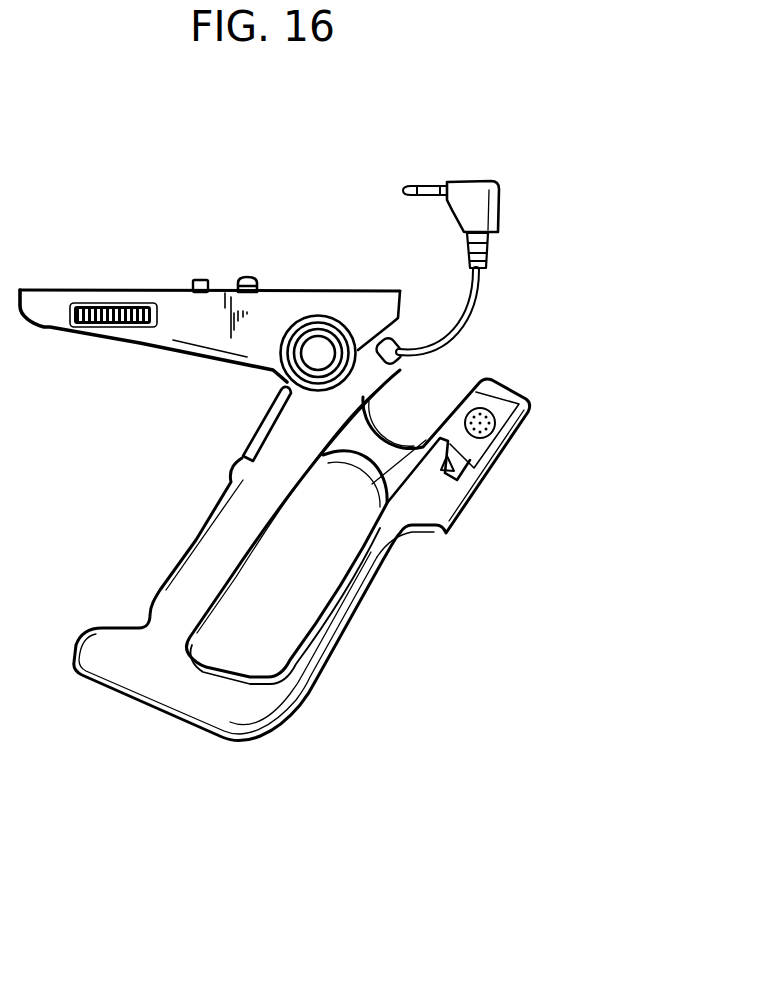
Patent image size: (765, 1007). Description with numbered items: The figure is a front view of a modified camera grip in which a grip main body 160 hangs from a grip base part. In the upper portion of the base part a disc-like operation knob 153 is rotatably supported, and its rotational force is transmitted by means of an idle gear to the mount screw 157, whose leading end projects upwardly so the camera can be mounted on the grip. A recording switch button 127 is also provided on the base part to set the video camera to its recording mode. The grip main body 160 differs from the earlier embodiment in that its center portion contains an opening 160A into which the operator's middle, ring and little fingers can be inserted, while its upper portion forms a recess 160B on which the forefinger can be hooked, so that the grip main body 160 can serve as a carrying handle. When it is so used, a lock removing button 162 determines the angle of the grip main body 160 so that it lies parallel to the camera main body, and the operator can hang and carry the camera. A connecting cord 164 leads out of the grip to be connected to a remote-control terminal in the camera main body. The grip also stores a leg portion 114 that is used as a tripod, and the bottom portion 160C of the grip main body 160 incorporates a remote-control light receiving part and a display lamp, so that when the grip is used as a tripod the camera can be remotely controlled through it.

The leg portion 114 is at (517, 402).
The recording switch button 127 is at (262, 425).
The operation knob 153 is at (100, 307).
The mount screw 157 is at (248, 278).
The grip main body 160 is at (313, 683).
The opening 160A is at (310, 597).
The recess 160B is at (408, 445).
The bottom portion 160C is at (123, 700).
The lock removing button 162 is at (320, 347).
The connecting cord 164 is at (470, 190).